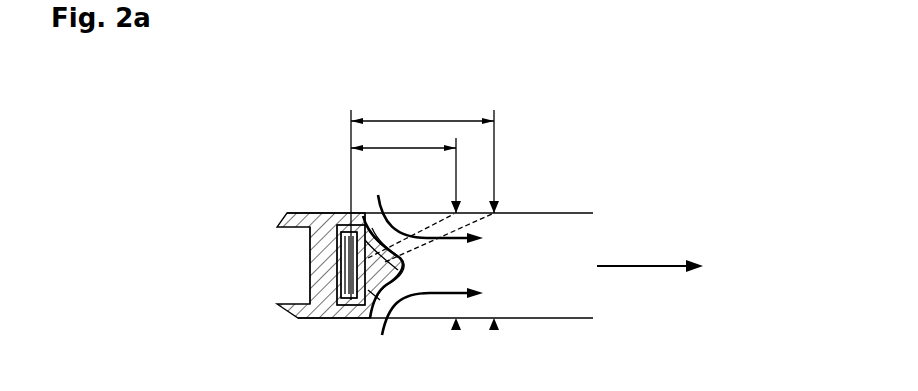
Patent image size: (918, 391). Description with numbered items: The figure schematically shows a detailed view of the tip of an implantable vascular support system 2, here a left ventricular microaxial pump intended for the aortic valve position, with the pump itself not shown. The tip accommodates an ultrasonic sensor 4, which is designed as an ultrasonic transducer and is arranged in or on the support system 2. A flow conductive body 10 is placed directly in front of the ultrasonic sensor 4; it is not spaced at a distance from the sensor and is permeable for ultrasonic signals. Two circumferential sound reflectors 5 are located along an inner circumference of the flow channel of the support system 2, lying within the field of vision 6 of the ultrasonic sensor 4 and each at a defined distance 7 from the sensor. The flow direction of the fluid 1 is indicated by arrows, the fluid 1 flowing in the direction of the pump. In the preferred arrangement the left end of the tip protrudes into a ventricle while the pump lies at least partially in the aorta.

The fluid 1 is at (408, 213).
The implantable vascular support system 2 is at (606, 115).
The ultrasonic sensor 4 is at (345, 308).
The circumferential sound reflectors 5 is at (492, 327).
The field of vision 6 is at (543, 258).
The distance 7 is at (400, 148).
The flow conductive body 10 is at (389, 303).